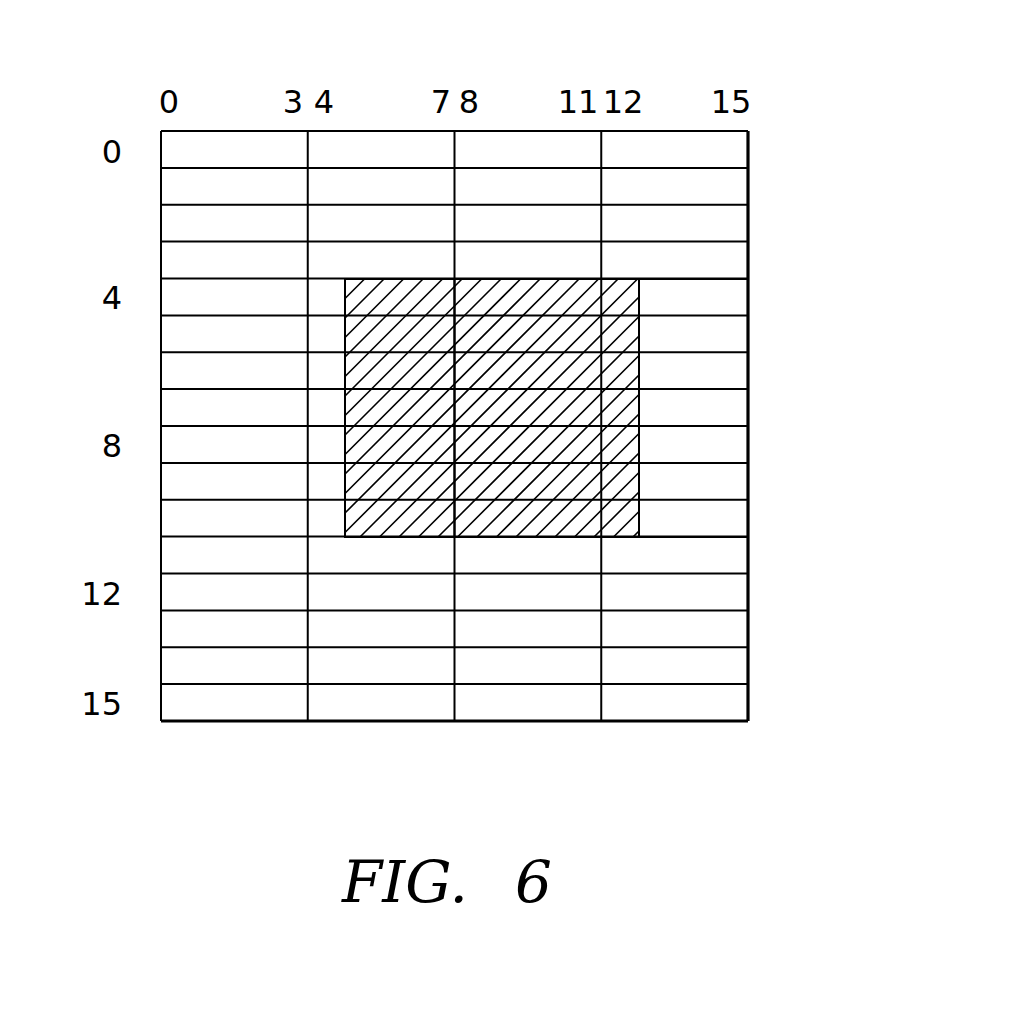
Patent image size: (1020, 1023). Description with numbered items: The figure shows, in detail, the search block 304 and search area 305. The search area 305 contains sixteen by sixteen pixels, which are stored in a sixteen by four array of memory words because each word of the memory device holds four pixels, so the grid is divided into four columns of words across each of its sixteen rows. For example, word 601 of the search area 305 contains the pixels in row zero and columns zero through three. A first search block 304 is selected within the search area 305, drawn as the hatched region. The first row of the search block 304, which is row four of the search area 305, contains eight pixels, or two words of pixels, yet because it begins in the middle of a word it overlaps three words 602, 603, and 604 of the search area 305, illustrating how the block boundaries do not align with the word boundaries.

The word 601 is at (235, 150).
The word 602 is at (412, 288).
The word 603 is at (563, 288).
The word 604 is at (697, 305).
The search block 304 is at (345, 486).
The search area 305 is at (238, 721).